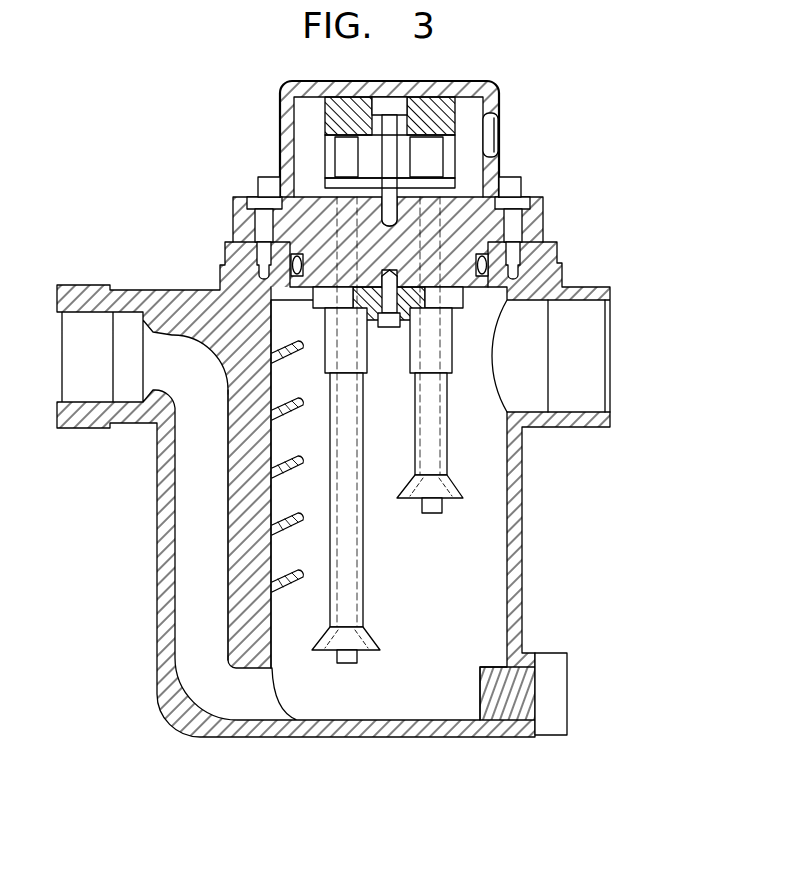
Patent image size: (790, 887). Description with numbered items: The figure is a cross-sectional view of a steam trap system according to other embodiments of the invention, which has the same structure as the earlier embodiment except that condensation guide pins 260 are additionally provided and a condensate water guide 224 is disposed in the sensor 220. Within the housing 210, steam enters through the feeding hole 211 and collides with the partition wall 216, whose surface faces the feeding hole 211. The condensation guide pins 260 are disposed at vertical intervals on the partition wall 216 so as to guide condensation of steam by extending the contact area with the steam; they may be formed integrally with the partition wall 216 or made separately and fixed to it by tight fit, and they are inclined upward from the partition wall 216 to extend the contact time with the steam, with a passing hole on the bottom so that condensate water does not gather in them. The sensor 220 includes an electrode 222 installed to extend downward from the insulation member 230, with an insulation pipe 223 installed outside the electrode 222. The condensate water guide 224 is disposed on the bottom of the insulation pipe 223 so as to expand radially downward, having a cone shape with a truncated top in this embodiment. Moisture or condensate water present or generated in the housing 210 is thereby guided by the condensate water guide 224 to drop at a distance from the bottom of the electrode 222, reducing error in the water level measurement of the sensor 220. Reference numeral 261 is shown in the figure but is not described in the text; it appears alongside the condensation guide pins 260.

The housing 210 is at (576, 267).
The feeding hole 211 is at (592, 350).
The partition wall 216 is at (228, 488).
The sensor 220 is at (455, 492).
The electrode 222 is at (345, 666).
The insulation pipe 223 is at (366, 540).
The condensate water guide 224 is at (386, 648).
The insulation member 230 is at (558, 194).
The condensation guide pins 260 is at (270, 362).
The fin 261 is at (288, 347).